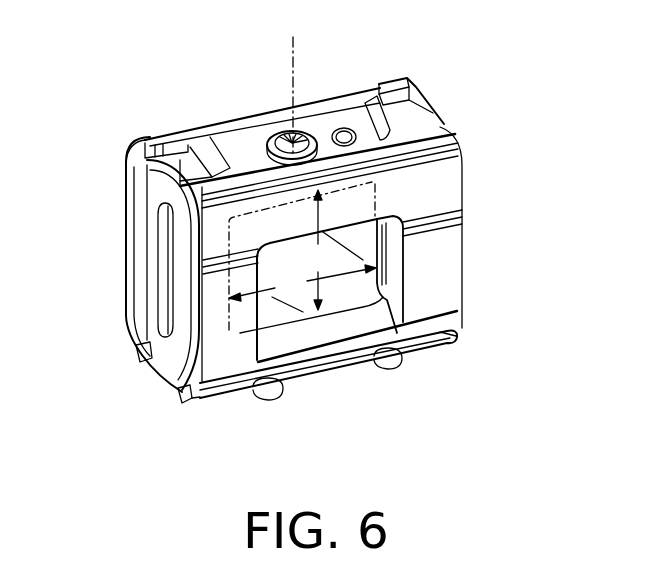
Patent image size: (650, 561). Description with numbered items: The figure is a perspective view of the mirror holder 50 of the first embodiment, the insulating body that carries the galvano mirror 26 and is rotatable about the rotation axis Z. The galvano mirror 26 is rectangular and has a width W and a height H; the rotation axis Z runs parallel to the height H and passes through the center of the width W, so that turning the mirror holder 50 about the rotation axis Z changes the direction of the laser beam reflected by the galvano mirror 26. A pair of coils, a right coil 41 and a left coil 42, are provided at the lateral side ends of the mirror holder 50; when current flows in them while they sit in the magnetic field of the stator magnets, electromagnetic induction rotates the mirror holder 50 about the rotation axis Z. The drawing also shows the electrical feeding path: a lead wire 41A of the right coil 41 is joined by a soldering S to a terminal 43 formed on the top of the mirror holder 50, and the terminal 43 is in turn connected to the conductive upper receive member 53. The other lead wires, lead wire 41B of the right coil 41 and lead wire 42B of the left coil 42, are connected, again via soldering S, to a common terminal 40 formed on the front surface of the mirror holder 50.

The galvano mirror 26 is at (362, 238).
The common terminal 40 is at (337, 371).
The right coil 41 is at (415, 117).
The lead wire of the right coil 41A is at (372, 117).
The lead wire of the right coil 41B is at (437, 353).
The left coil 42 is at (150, 200).
The lead wire of the left coil 42B is at (227, 400).
The terminal 43 is at (322, 127).
The mirror holder 50 is at (436, 172).
The upper receive member 53 is at (287, 134).
The soldering S is at (341, 129).
The rotation axis Z is at (294, 80).
The height H is at (319, 250).
The width W is at (302, 283).